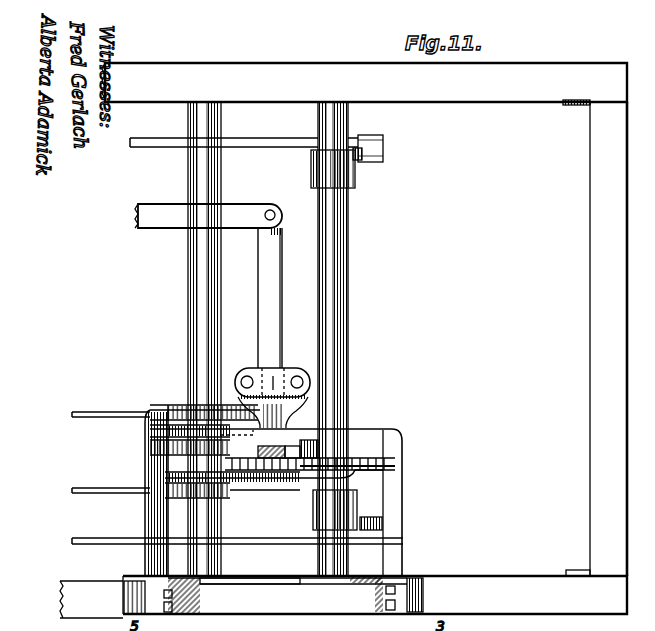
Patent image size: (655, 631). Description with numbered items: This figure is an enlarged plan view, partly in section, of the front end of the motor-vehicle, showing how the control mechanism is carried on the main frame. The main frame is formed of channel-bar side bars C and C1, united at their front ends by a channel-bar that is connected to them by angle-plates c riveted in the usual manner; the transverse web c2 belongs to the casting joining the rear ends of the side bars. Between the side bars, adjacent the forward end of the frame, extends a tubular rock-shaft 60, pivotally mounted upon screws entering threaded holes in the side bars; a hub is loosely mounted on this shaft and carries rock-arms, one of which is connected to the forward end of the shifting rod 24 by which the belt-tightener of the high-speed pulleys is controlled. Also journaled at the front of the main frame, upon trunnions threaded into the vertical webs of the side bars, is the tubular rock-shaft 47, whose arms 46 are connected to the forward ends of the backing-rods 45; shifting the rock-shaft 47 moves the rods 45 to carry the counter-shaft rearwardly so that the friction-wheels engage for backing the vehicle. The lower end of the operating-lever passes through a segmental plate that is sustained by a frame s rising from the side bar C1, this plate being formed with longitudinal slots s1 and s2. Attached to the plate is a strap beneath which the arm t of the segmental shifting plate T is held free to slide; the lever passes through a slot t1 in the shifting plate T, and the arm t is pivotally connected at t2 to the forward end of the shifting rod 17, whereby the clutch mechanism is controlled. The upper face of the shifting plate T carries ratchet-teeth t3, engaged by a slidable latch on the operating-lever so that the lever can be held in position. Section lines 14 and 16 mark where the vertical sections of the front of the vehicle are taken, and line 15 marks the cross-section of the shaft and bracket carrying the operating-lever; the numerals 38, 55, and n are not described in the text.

The side bar C is at (364, 82).
The angle-plate c is at (575, 106).
The transverse web c2 is at (608, 339).
The side bar C1 is at (343, 594).
The rock-shaft 60 is at (190, 321).
The rock-shaft 47 is at (349, 298).
The backing-rod 45 is at (237, 341).
The arm of rock-shaft 46 is at (364, 158).
The shifting rod 24 is at (93, 428).
The bar 55 is at (95, 477).
The shifting rod 17 is at (208, 216).
The pivotal connection t2 is at (272, 210).
The arm of shifting plate t is at (273, 328).
The section line 15 is at (284, 345).
The link block 38 is at (288, 369).
The longitudinal slot s2 is at (166, 404).
The segmental shifting plate T is at (393, 440).
The frame s is at (362, 442).
The block n is at (300, 426).
The slot t1 is at (376, 448).
The ratchet-teeth t3 is at (400, 462).
The longitudinal slot s1 is at (255, 493).
The section line 14 is at (493, 432).
The section line 16 is at (493, 490).